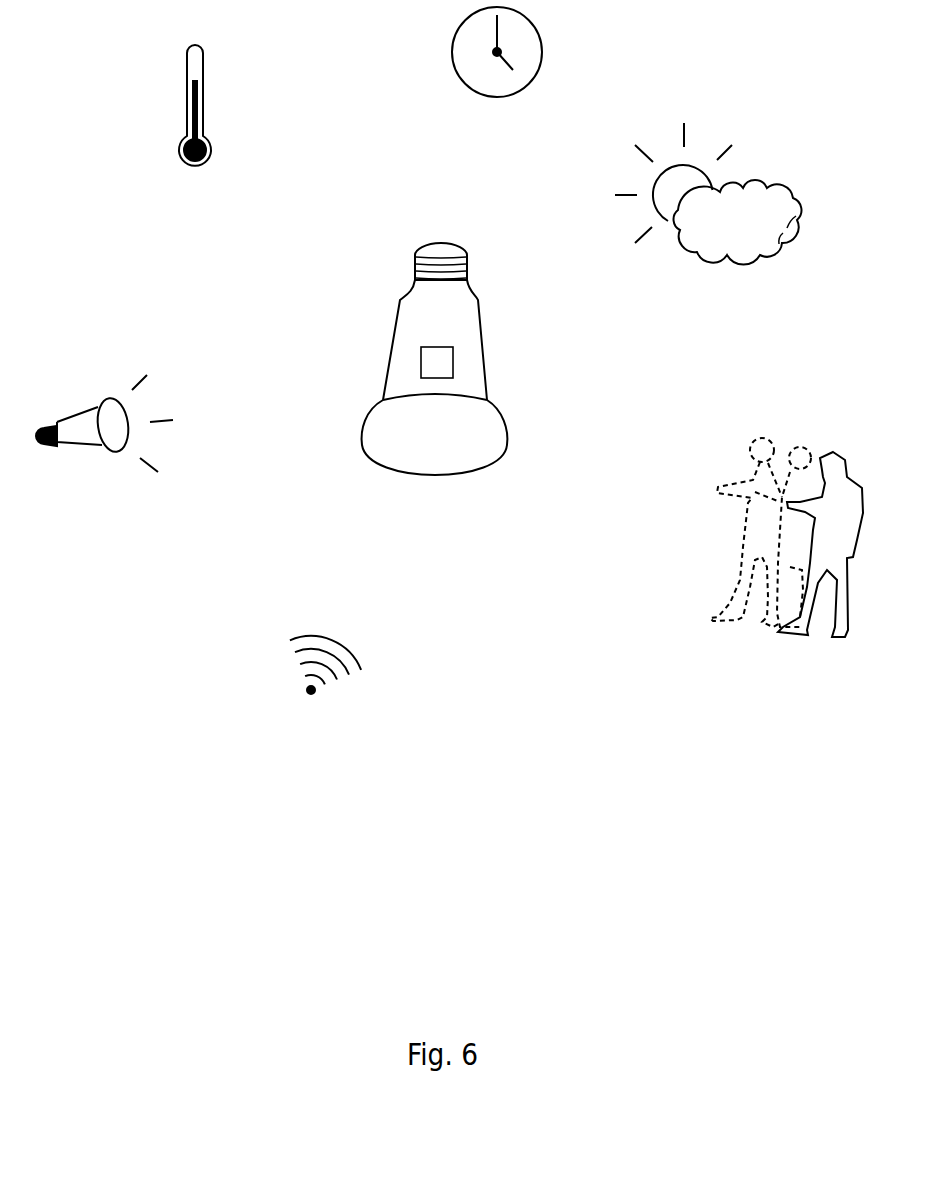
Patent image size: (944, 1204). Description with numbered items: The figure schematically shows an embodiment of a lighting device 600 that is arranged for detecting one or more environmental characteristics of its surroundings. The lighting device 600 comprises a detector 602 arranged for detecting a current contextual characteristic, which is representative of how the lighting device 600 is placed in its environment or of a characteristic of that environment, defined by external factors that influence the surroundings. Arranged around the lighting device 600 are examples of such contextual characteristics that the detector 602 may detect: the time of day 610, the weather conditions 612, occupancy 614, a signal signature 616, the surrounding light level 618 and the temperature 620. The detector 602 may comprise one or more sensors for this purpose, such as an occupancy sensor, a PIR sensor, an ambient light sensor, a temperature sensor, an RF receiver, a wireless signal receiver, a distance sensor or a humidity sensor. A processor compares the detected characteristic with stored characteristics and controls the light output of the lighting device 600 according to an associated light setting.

The lighting device 600 is at (470, 447).
The detector 602 is at (445, 367).
The time of day 610 is at (552, 48).
The weather conditions 612 is at (715, 273).
The occupancy 614 is at (757, 645).
The signal signature 616 is at (372, 673).
The surrounding light level 618 is at (165, 450).
The temperature 620 is at (210, 107).